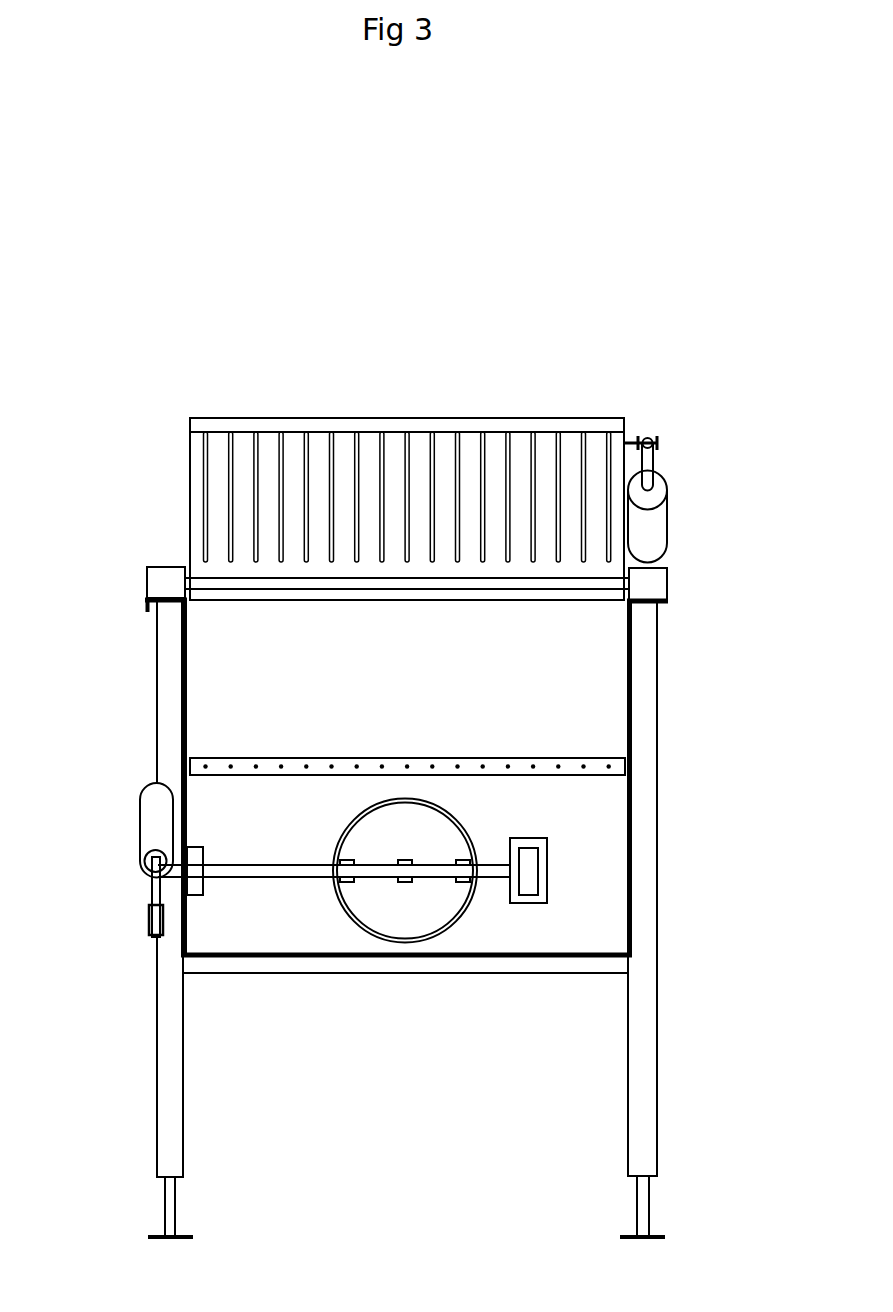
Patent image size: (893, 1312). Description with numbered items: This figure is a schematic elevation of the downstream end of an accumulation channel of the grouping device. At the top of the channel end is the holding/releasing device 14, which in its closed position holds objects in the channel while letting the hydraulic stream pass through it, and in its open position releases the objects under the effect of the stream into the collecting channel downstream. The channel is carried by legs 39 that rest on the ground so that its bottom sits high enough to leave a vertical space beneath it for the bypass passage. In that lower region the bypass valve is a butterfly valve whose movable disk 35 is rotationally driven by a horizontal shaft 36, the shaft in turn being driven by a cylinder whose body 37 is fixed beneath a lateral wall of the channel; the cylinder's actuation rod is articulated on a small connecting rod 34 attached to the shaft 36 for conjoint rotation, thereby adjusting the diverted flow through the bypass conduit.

The holding/releasing device 14 is at (474, 425).
The small connecting rod 34 is at (155, 893).
The movable disk 35 is at (425, 907).
The horizontal shaft 36 is at (315, 872).
The body 37 is at (150, 807).
The legs 39 is at (168, 1073).